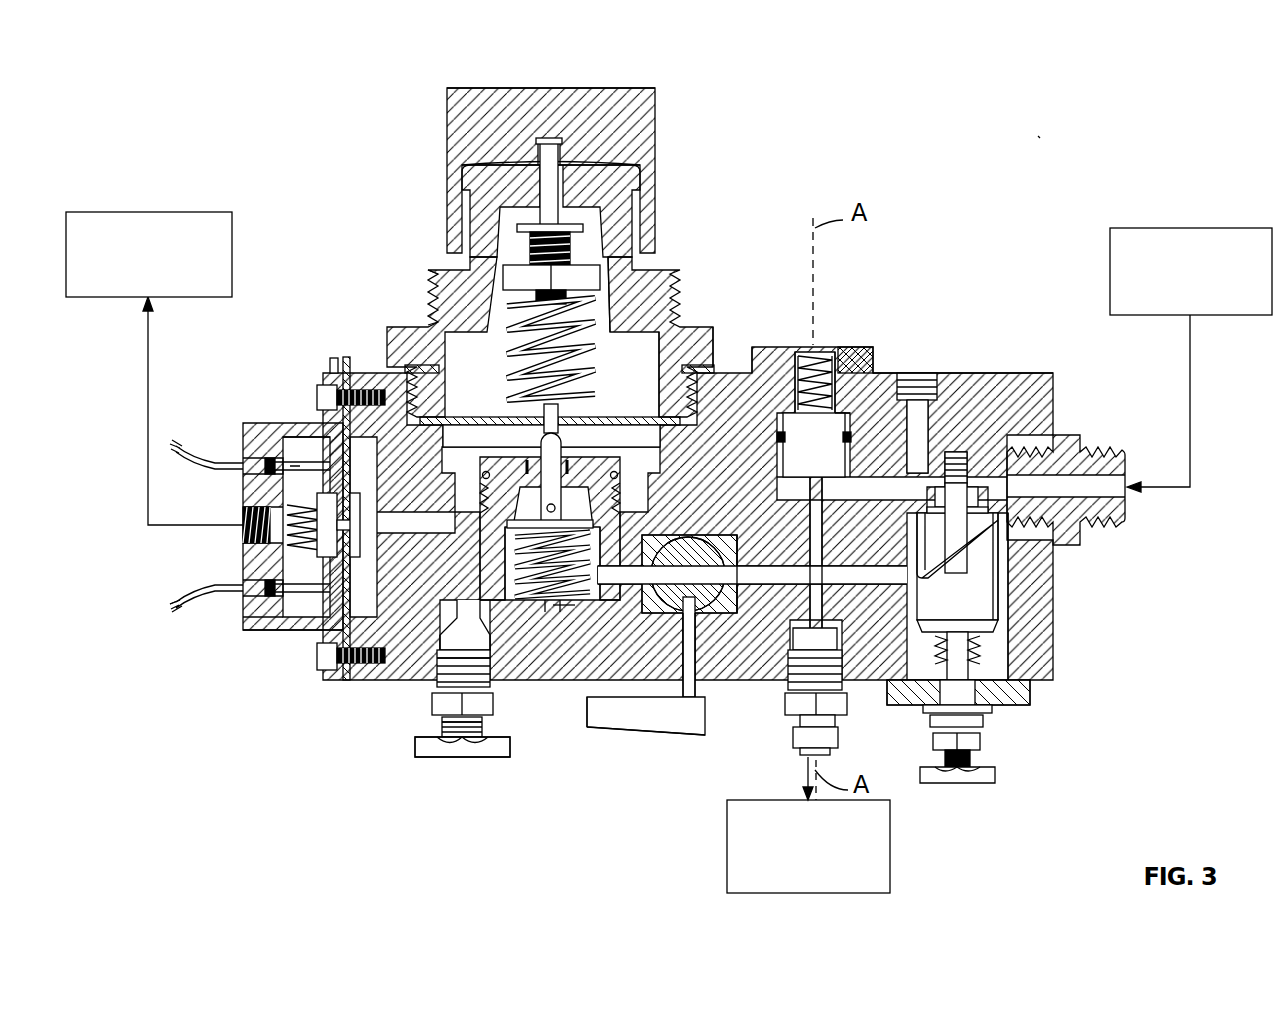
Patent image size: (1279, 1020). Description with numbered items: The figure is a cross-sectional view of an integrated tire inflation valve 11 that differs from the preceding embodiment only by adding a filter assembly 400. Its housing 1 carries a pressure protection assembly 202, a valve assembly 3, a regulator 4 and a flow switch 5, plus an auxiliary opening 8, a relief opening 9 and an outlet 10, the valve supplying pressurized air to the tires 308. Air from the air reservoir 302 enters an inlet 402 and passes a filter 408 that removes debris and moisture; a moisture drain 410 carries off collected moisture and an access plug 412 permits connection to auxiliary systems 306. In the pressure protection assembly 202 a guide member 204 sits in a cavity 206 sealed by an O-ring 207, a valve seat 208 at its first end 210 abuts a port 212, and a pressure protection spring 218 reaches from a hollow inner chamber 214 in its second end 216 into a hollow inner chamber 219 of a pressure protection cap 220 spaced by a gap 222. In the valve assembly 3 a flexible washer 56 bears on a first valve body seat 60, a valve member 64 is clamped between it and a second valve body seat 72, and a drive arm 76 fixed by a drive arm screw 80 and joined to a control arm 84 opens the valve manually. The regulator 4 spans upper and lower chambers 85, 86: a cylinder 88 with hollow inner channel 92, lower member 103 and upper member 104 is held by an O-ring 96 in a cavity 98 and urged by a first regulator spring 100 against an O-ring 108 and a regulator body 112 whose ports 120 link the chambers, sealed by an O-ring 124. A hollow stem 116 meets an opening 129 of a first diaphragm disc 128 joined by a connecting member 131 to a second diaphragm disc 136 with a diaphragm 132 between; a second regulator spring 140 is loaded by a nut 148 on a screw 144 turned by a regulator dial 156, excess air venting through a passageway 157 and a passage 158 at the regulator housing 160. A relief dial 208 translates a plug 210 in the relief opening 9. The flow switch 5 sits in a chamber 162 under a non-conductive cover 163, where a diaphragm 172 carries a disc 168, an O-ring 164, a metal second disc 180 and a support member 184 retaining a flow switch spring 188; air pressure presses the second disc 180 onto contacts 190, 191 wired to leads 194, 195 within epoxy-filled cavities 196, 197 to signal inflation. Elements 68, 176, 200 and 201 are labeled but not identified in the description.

The housing 1 is at (765, 370).
The valve assembly 3 is at (690, 532).
The regulator 4 is at (664, 74).
The flow switch 5 is at (324, 446).
The auxiliary opening or channel 8 is at (847, 720).
The relief opening or channel 9 is at (470, 778).
The outlet 10 is at (243, 525).
The integrated tire inflation valve 11 is at (1042, 136).
The washer 56 is at (745, 600).
The first valve body seat 60 is at (738, 620).
The valve member 64 is at (705, 700).
The ball pin 68 is at (716, 630).
The second valve body seat 72 is at (627, 680).
The drive arm 76 is at (680, 700).
The drive arm screw 80 is at (662, 700).
The control arm 84 is at (653, 715).
The upper chamber 85 is at (657, 335).
The lower chamber 86 is at (602, 602).
The cylinder 88 is at (540, 625).
The hollow inner channel 92 is at (563, 617).
The O-ring 96 is at (570, 620).
The cavity 98 is at (565, 635).
The first regulator spring 100 is at (525, 627).
The lower member 103 is at (553, 630).
The upper member 104 is at (492, 640).
The O-ring 108 is at (548, 590).
The regulator body 112 is at (555, 540).
The hollow stem 116 is at (552, 496).
The ports 120 is at (535, 492).
The O-ring 124 is at (523, 478).
The first diaphragm disc 128 is at (505, 437).
The opening 129 is at (510, 348).
The connecting member 131 is at (583, 417).
The diaphragm 132 is at (658, 412).
The second diaphragm disc 136 is at (616, 345).
The second regulator spring 140 is at (512, 318).
The screw 144 is at (530, 260).
The nut 148 is at (595, 270).
The regulator dial 156 is at (648, 117).
The passageway 157 is at (505, 185).
The passage 158 is at (520, 168).
The regulator housing 160 is at (622, 215).
The chamber 162 is at (318, 423).
The cover 163 is at (250, 620).
The O-ring 164 is at (368, 392).
The disc 168 is at (352, 390).
The diaphragm 172 is at (343, 655).
The bonnet threads 176 is at (425, 297).
The second disc 180 is at (322, 500).
The support member 184 is at (175, 598).
The flow switch spring 188 is at (318, 548).
The contact 190 is at (297, 446).
The contact 191 is at (268, 632).
The lead 194 is at (205, 452).
The lead 195 is at (178, 608).
The cavity 196 is at (240, 460).
The cavity 197 is at (252, 597).
The upper contact bore 200 is at (250, 475).
The lower contact 201 is at (315, 562).
The pressure protection assembly 202 is at (891, 291).
The guide member 204 is at (973, 377).
The cavity 206 is at (850, 392).
The O-ring 207 is at (847, 437).
The relief dial 208 is at (425, 752).
The plug 210 is at (440, 668).
The port 212 is at (953, 557).
The hollow inner chamber 214 is at (862, 405).
The second end 216 is at (805, 400).
The pressure protection spring 218 is at (838, 395).
The hollow inner chamber 219 is at (840, 375).
The pressure protection cap 220 is at (800, 380).
The gap 222 is at (760, 385).
The air reservoir 302 is at (1190, 230).
The auxiliary systems 306 is at (890, 850).
The tires 308 is at (148, 213).
The filter assembly 400 is at (992, 660).
The inlet 402 is at (1088, 487).
The filter 408 is at (1017, 630).
The moisture drain 410 is at (993, 707).
The access plug 412 is at (940, 373).